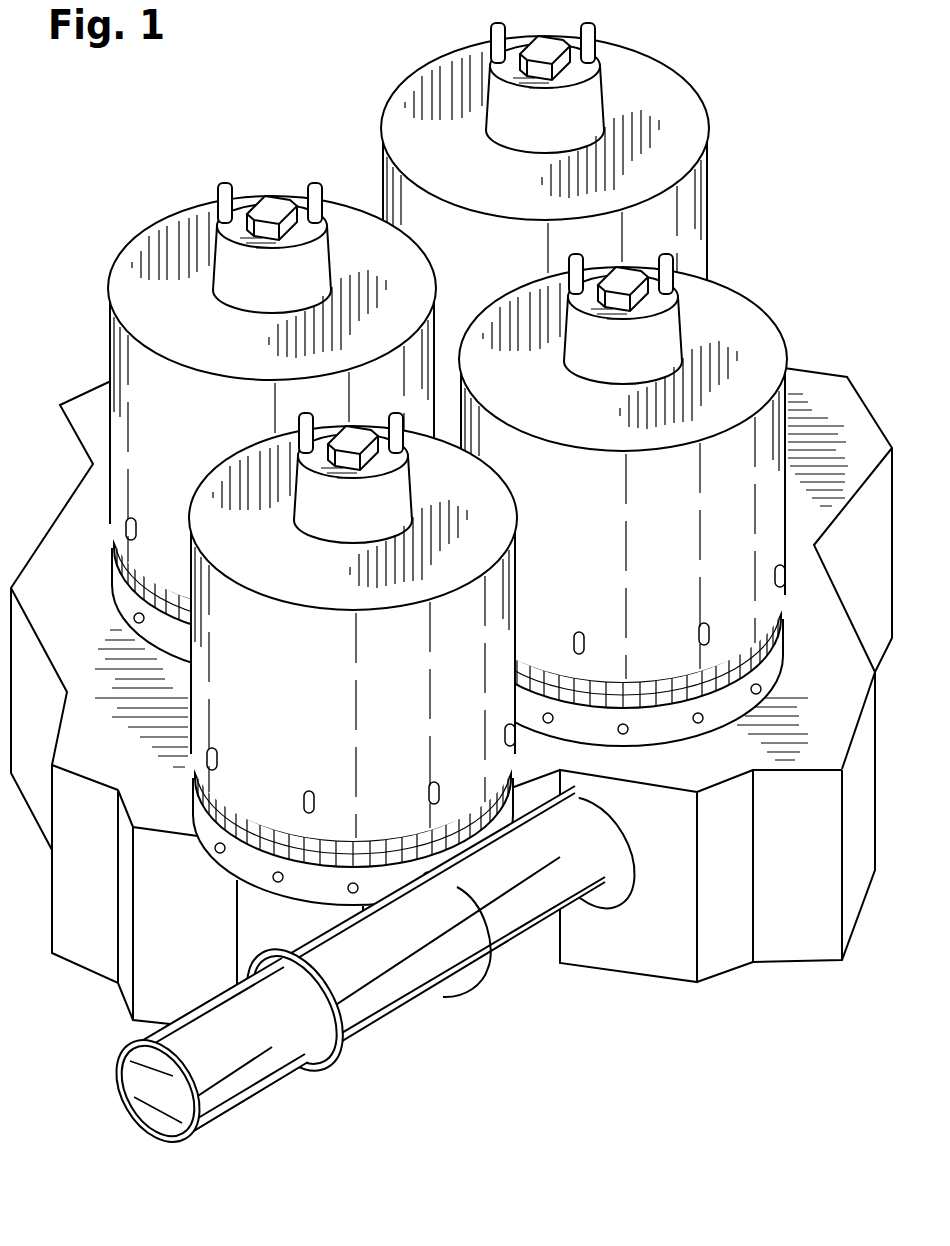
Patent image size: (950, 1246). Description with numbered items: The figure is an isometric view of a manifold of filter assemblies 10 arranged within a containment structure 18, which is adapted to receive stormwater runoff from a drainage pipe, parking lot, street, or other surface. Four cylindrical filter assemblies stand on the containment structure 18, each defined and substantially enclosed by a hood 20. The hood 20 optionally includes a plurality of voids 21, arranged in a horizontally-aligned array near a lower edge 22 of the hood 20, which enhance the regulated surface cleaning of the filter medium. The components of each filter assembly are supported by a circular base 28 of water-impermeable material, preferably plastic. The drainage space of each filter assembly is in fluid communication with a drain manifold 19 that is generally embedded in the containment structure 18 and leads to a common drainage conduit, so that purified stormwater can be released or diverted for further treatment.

The manifold of filter assemblies 10 is at (737, 43).
The containment structure 18 is at (89, 760).
The drain manifold 19 is at (265, 1072).
The hood 20 is at (190, 492).
The voids 21 is at (361, 766).
The lower edge 22 is at (326, 809).
The base 28 is at (349, 855).